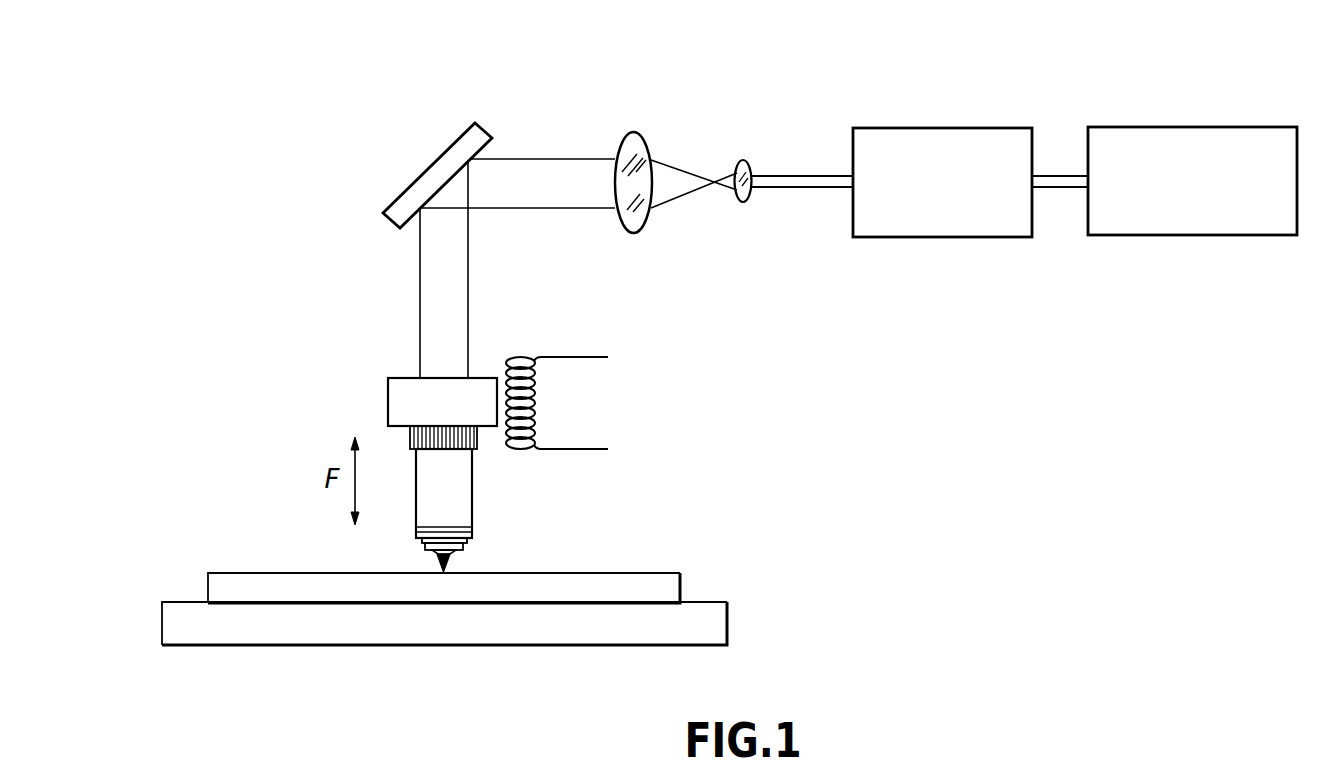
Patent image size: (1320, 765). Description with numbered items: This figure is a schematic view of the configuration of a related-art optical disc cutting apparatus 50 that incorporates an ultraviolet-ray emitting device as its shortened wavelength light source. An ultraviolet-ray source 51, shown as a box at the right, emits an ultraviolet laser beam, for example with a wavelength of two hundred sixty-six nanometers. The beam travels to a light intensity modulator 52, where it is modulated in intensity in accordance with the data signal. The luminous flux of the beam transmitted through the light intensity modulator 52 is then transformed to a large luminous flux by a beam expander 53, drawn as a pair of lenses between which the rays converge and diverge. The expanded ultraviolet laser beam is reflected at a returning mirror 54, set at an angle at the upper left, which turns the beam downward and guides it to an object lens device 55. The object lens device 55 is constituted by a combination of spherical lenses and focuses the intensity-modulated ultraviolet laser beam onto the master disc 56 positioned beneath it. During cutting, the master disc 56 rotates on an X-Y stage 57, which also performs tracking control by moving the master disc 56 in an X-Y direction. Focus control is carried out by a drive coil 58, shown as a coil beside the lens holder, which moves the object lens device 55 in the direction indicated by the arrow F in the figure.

The optical disc cutting apparatus 50 is at (670, 100).
The ultraviolet-ray source 51 is at (1192, 127).
The light intensity modulator 52 is at (942, 128).
The beam expander 53 is at (705, 203).
The returning mirror 54 is at (411, 185).
The object lens device 55 is at (473, 502).
The master disc 56 is at (681, 582).
The X-Y stage 57 is at (729, 627).
The drive coil 58 is at (518, 357).